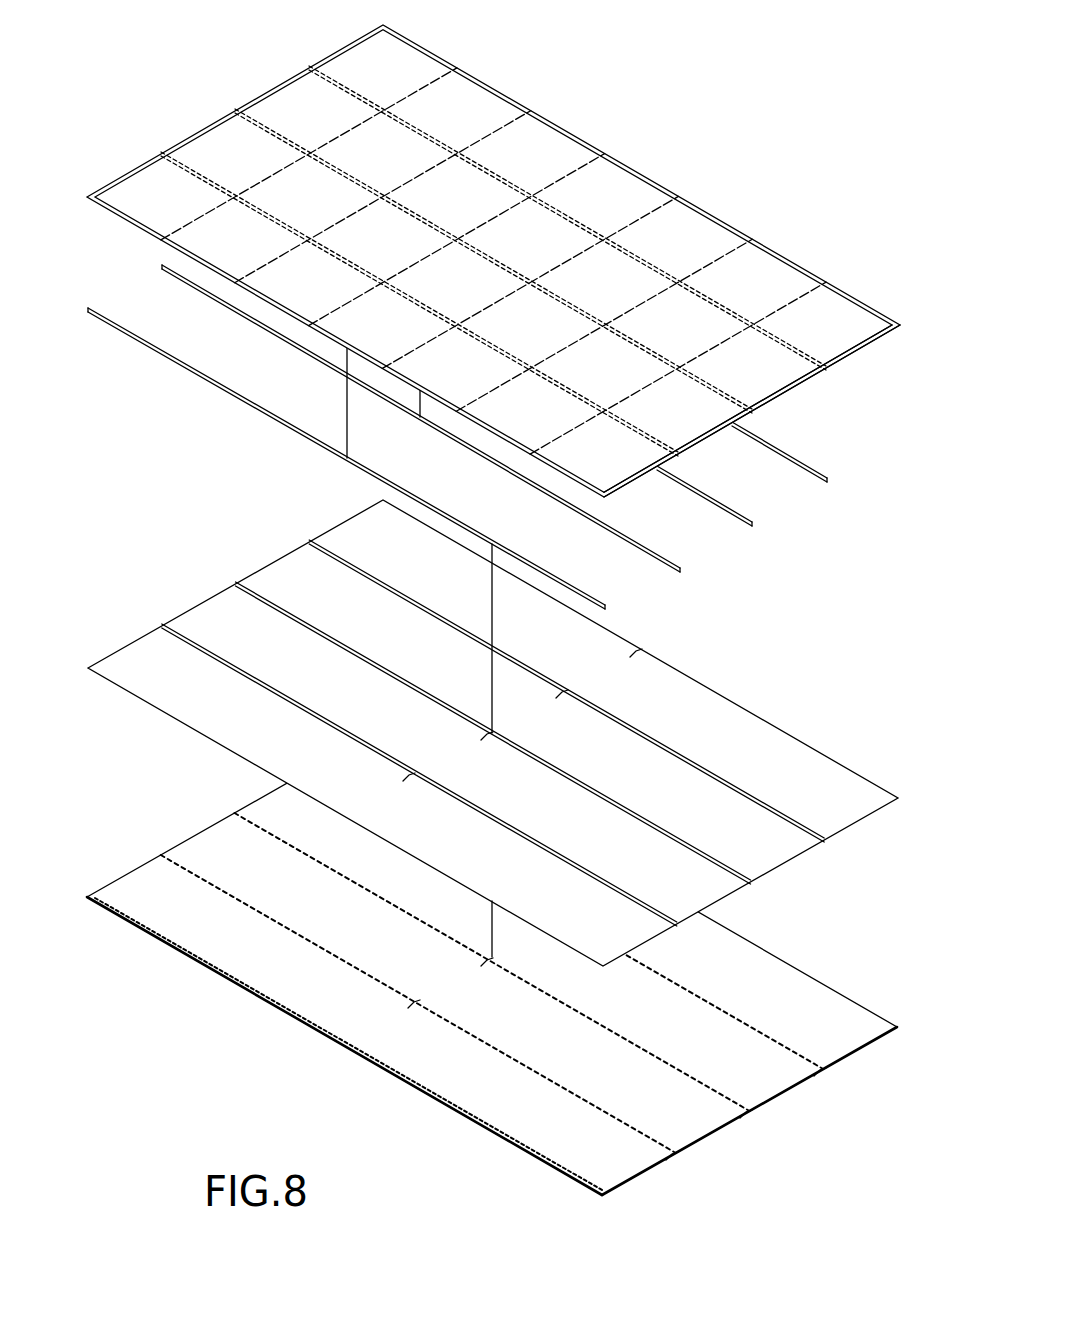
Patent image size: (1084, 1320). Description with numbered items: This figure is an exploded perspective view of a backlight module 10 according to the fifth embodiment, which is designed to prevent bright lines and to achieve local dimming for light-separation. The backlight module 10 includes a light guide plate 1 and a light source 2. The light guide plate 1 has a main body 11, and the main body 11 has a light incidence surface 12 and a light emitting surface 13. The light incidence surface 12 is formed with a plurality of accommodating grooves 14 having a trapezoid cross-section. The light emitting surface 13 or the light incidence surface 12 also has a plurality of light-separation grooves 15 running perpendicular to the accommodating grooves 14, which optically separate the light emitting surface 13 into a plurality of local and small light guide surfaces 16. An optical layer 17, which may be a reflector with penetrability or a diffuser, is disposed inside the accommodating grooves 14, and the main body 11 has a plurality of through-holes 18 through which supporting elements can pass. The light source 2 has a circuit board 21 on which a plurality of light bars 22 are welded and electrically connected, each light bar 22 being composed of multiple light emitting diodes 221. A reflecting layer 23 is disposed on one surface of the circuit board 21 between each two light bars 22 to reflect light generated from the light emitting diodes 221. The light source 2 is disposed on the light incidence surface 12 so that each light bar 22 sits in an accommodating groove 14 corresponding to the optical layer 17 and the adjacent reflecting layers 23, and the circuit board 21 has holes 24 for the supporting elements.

The light guide plate 1 is at (493, 317).
The backlight module 10 is at (493, 316).
The main body 11 is at (676, 187).
The light incidence surface 12 is at (788, 390).
The light emitting surface 13 is at (725, 228).
The accommodating grooves 14 is at (825, 367).
The light-separation grooves 15 is at (550, 150).
The light guide surfaces 16 is at (837, 322).
The optical layer 17 is at (237, 397).
The through-holes 18 is at (567, 220).
The light source 2 is at (492, 847).
The circuit board 21 is at (703, 1128).
The light bars 22 is at (745, 1084).
The light emitting diodes 221 is at (743, 1102).
The reflecting layer 23 is at (762, 743).
The holes 24 is at (417, 1003).